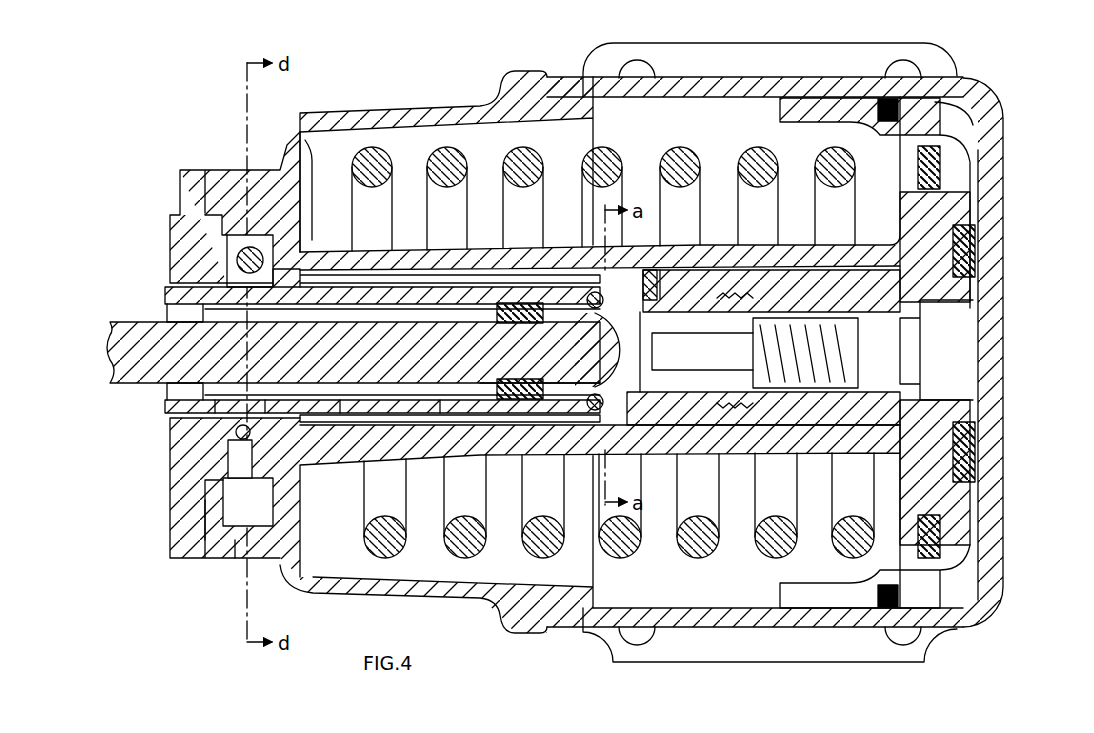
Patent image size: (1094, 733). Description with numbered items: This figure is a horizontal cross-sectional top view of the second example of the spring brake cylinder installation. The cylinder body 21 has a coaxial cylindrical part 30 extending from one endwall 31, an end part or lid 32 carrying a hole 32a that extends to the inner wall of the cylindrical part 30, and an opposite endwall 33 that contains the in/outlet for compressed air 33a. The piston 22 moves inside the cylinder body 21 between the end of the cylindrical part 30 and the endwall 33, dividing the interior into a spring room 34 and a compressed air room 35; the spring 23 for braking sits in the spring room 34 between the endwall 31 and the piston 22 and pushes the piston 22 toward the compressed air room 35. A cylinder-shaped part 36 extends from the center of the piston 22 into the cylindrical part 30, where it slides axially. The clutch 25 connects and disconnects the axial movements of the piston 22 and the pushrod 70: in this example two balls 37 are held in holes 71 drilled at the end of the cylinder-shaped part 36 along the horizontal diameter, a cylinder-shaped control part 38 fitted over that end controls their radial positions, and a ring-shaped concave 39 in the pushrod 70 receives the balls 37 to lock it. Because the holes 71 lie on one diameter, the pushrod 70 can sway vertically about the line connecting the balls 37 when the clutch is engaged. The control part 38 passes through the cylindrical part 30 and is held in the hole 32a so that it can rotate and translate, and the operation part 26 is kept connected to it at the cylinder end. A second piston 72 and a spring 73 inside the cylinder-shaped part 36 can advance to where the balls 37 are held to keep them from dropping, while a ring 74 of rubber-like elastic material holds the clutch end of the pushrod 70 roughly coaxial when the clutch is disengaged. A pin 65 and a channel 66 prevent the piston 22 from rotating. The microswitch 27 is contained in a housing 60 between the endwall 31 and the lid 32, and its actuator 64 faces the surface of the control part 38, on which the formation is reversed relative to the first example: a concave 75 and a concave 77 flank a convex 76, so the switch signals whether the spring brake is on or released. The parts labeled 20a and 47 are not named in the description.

The housing 20a is at (1007, 137).
The cylinder body 21 is at (571, 81).
The piston 22 is at (966, 112).
The spring for braking 23 is at (683, 160).
The clutch 25 is at (626, 430).
The operation part 26 is at (258, 248).
The microswitch 27 is at (220, 514).
The cylindrical part 30 is at (453, 262).
The endwall 31 is at (292, 150).
The end part 32 is at (178, 226).
The hole 32a is at (166, 298).
The endwall 33 is at (1004, 185).
The in/outlet for compressed air 33a is at (990, 389).
The spring room 34 is at (718, 106).
The compressed air room 35 is at (975, 540).
The cylinder-shaped part 36 is at (770, 284).
The balls 37 is at (592, 310).
The control part 38 is at (520, 265).
The concave 39 is at (614, 372).
The bearing race 47 is at (214, 273).
The housing 60 is at (244, 546).
The actuator 64 is at (265, 405).
The pin 65 is at (648, 268).
The channel 66 is at (682, 268).
The pushrod 70 is at (130, 386).
The holes 71 is at (598, 396).
The second piston 72 is at (683, 336).
The spring 73 is at (756, 345).
The ring 74 is at (522, 392).
The concave 75 is at (352, 405).
The convex 76 is at (222, 405).
The concave 77 is at (449, 400).